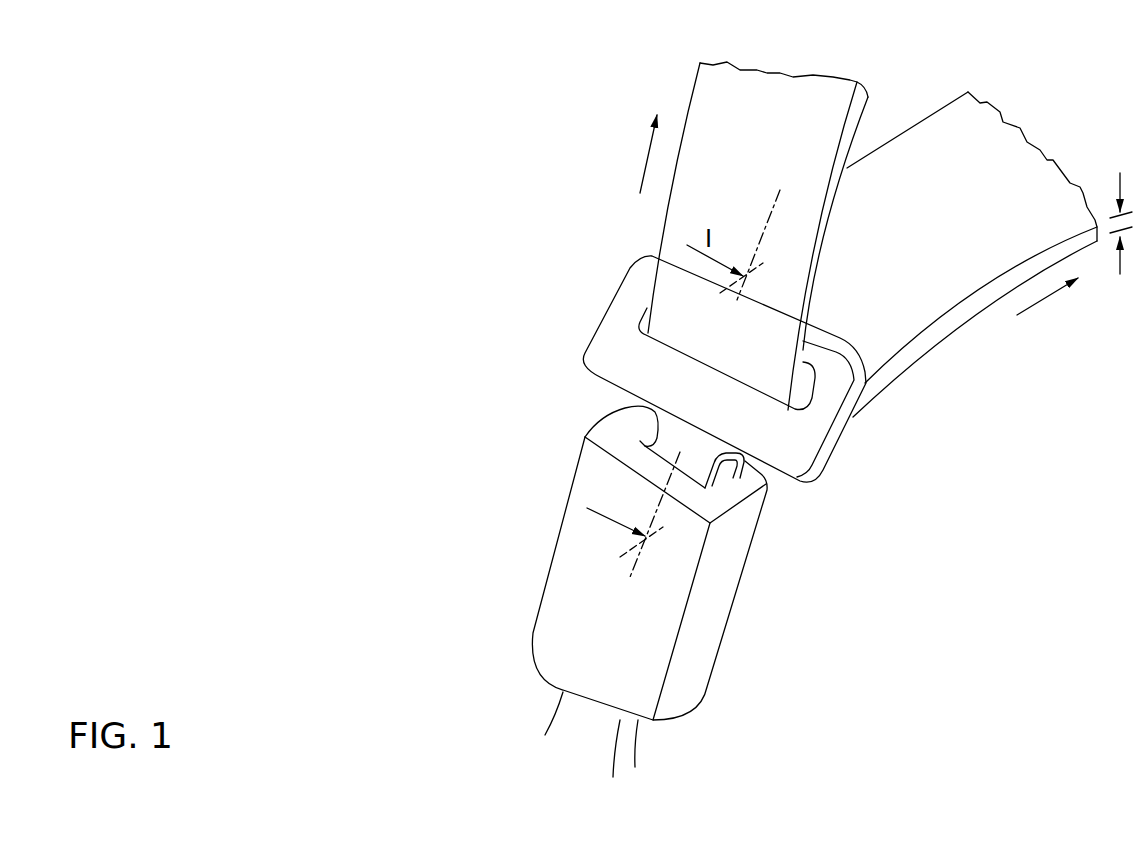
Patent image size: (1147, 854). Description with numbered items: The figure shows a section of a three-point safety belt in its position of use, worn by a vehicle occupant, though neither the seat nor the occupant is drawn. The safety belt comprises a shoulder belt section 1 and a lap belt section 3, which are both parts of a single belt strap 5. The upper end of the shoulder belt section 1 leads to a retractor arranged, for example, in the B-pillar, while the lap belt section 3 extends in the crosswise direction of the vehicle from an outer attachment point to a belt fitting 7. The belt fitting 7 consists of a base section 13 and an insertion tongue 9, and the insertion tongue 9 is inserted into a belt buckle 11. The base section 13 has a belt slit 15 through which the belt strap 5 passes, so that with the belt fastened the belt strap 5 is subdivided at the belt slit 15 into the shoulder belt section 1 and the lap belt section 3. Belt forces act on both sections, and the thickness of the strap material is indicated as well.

The shoulder belt section 1 is at (818, 250).
The lap belt section 3 is at (957, 320).
The belt strap 5 is at (873, 277).
The belt fitting 7 is at (656, 369).
The insertion tongue 9 is at (662, 440).
The belt buckle 11 is at (570, 575).
The base section 13 is at (602, 349).
The belt slit 15 is at (640, 316).